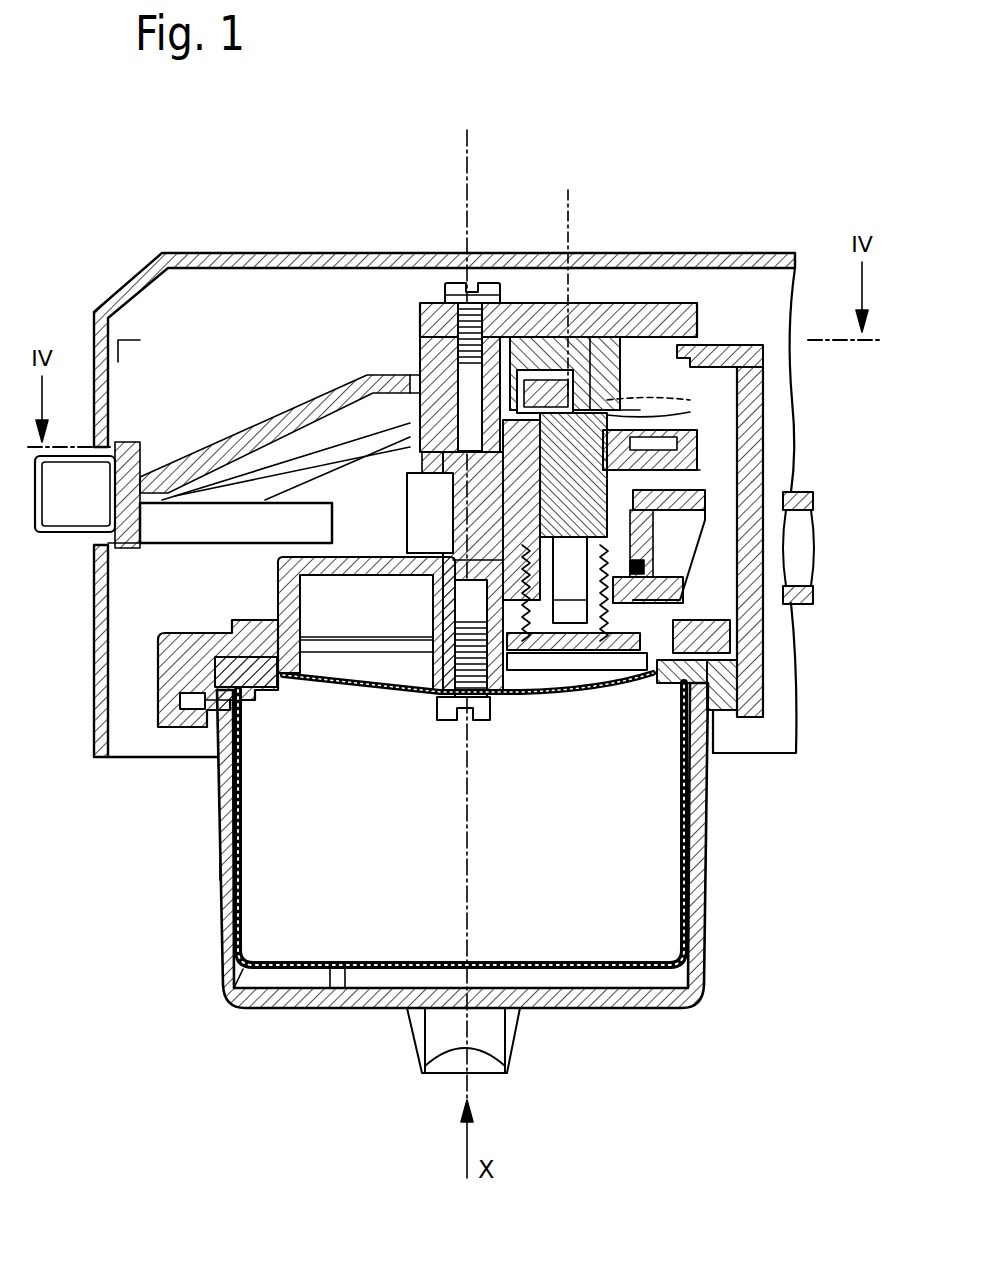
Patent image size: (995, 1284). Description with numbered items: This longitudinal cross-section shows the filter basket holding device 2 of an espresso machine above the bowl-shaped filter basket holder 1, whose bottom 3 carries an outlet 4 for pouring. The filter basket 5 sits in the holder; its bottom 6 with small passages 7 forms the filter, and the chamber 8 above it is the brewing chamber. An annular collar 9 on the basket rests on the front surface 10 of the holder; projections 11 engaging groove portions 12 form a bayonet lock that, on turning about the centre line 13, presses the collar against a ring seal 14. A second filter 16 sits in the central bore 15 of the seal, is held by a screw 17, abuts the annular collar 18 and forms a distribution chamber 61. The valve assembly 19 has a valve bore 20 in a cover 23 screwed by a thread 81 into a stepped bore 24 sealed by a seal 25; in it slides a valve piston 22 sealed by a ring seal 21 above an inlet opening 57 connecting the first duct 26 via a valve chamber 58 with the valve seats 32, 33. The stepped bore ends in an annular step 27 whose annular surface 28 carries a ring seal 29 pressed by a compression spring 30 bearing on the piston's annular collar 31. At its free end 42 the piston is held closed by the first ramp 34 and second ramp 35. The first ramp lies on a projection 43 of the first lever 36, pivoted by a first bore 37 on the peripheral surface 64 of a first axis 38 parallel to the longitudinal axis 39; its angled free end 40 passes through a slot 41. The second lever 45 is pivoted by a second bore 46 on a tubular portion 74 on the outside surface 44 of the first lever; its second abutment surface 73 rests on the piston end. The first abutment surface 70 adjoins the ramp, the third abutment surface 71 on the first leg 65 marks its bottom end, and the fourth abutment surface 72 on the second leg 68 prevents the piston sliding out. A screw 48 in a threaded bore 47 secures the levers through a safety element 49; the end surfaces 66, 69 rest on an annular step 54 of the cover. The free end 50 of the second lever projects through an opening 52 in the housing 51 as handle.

The filter basket holder 1 is at (222, 932).
The filter basket holding device 2 is at (187, 652).
The bottom 3 is at (600, 1010).
The outlet 4 is at (500, 1045).
The filter basket 5 is at (225, 870).
The bottom 6 is at (305, 998).
The passages 7 is at (348, 990).
The brewing chamber 8 is at (650, 857).
The annular collar 9 is at (215, 688).
The front surface 10 is at (737, 685).
The projections 11 is at (190, 736).
The groove portions 12 is at (180, 704).
The centre line 13 is at (466, 137).
The ring seal 14 is at (258, 682).
The central bore 15 is at (290, 676).
The second filter 16 is at (342, 700).
The screw 17 is at (455, 722).
The annular collar 18 is at (290, 640).
The valve assembly 19 is at (692, 560).
The valve bore 20 is at (690, 450).
The ring seal 21 is at (705, 495).
The valve piston 22 is at (680, 445).
The cover 23 is at (500, 472).
The stepped bore 24 is at (518, 652).
The seal 25 is at (660, 486).
The first duct 26 is at (802, 555).
The annular step 27 is at (560, 625).
The annular surface 28 is at (585, 622).
The ring seal 29 is at (603, 662).
The compression spring 30 is at (663, 600).
The annular collar 31 is at (644, 567).
The sealing seat 32 is at (525, 652).
The sealing seat 33 is at (585, 652).
The first ramp 34 is at (612, 330).
The second ramp 35 is at (548, 360).
The first lever 36 is at (732, 348).
The first bore 37 is at (422, 320).
The first axis 38 is at (438, 360).
The longitudinal axis 39 is at (580, 390).
The free end 40 is at (762, 425).
The slot 41 is at (730, 640).
The free end 42 is at (593, 360).
The projection 43 is at (606, 400).
The outside surface 44 is at (440, 345).
The second lever 45 is at (302, 415).
The second bore 46 is at (425, 360).
The threaded bore 47 is at (430, 380).
The screw 48 is at (485, 340).
The safety element 49 is at (680, 310).
The free end 50 is at (87, 440).
The housing 51 is at (210, 255).
The opening 52 is at (92, 538).
The annular step 54 is at (470, 462).
The inlet opening 57 is at (630, 530).
The valve chamber 58 is at (660, 606).
The distribution chamber 61 is at (397, 680).
The peripheral surface 64 is at (500, 340).
The first leg 65 is at (640, 390).
The end surface 66 is at (410, 478).
The second leg 68 is at (518, 380).
The end surface 69 is at (410, 455).
The first abutment surface 70 is at (690, 410).
The third abutment surface 71 is at (690, 392).
The fourth abutment surface 72 is at (533, 390).
The second abutment surface 73 is at (568, 277).
The tubular portion 74 is at (420, 400).
The thread 81 is at (480, 562).